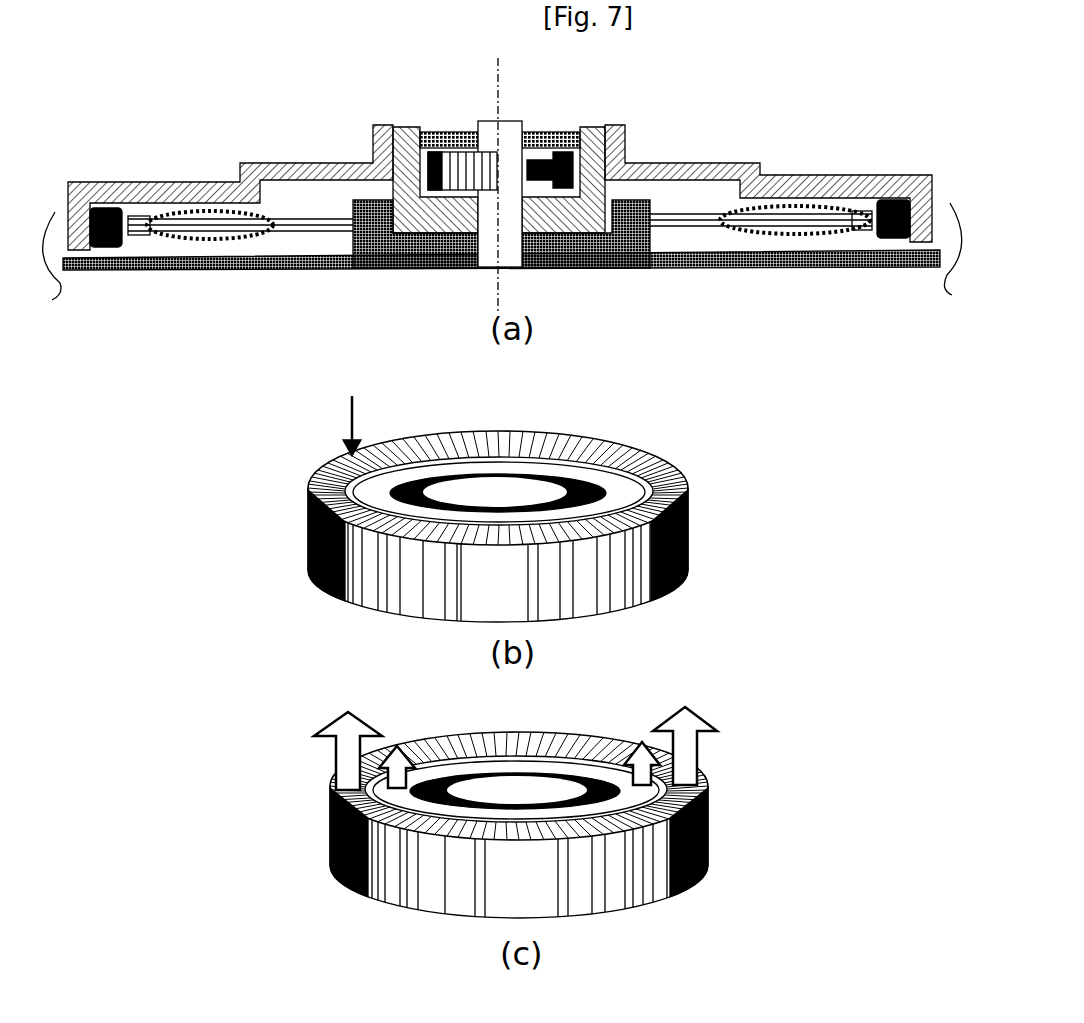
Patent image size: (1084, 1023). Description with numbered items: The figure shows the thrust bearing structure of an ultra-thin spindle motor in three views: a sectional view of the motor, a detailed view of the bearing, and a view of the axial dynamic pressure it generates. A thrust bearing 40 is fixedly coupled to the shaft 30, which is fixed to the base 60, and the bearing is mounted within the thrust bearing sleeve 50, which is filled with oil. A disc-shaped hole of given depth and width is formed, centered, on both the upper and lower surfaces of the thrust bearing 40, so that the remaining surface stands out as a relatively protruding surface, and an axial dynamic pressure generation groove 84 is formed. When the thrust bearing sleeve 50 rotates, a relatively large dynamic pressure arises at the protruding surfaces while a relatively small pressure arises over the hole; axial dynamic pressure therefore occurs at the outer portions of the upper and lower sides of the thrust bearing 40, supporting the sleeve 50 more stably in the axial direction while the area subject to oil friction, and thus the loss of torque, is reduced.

The shaft 30 is at (510, 228).
The thrust bearing 40 is at (443, 152).
The thrust bearing sleeve 50 is at (573, 267).
The base 60 is at (665, 268).
The axial dynamic pressure generation groove 84 is at (351, 410).